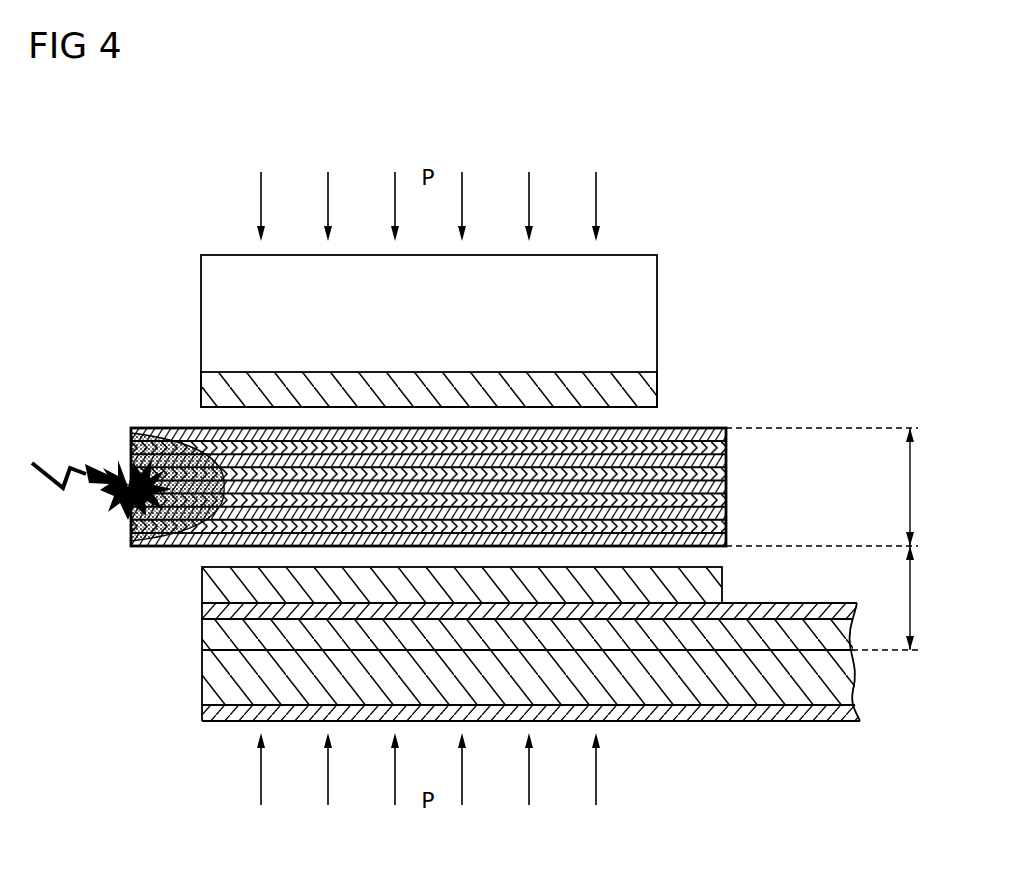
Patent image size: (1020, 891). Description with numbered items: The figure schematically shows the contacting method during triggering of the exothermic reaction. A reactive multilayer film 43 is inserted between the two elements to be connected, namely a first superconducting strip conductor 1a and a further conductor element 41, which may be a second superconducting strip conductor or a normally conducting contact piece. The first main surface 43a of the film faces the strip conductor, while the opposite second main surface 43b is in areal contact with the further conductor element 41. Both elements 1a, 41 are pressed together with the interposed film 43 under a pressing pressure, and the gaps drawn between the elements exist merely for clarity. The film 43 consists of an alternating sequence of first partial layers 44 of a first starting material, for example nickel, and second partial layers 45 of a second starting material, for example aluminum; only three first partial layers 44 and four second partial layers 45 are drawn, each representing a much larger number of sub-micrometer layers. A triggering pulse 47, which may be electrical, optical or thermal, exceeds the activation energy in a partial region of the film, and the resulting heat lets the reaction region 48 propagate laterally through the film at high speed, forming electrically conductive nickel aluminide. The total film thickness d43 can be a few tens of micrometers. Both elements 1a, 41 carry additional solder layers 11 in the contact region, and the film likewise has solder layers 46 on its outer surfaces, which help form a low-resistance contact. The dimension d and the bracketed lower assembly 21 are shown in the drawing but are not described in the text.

The further conductor element 41 is at (683, 309).
The solder layer 11 is at (642, 385).
The lower press / counter tool 21 is at (532, 742).
The first superconducting strip conductor 1a is at (532, 688).
The reactive multilayer film 43 is at (493, 488).
The first main surface 43a is at (154, 547).
The second main surface 43b is at (167, 427).
The first partial layers 44 is at (727, 463).
The second partial layers 45 is at (727, 478).
The solder layers 46 is at (727, 435).
The triggering pulse 47 is at (52, 453).
The reaction region 48 is at (130, 525).
The total thickness of the film d43 is at (908, 506).
The thickness dimension d is at (908, 589).